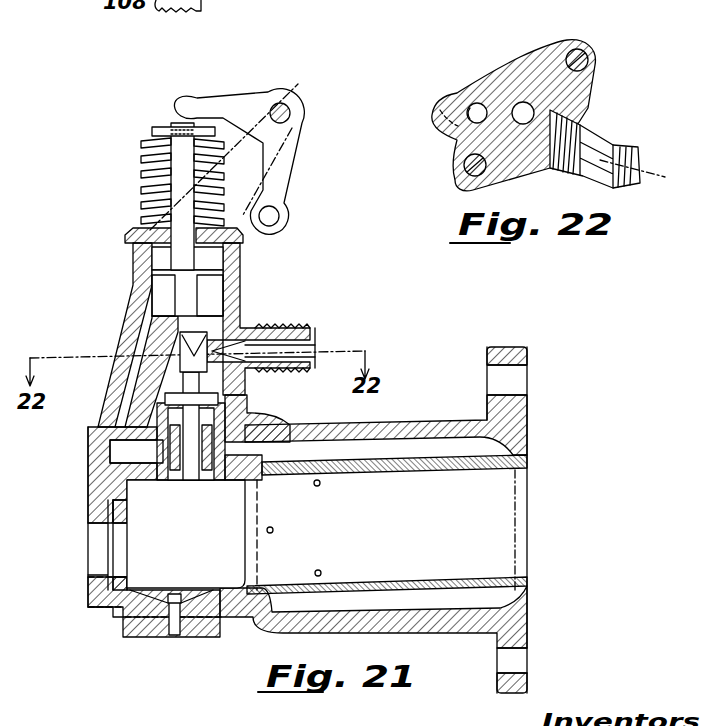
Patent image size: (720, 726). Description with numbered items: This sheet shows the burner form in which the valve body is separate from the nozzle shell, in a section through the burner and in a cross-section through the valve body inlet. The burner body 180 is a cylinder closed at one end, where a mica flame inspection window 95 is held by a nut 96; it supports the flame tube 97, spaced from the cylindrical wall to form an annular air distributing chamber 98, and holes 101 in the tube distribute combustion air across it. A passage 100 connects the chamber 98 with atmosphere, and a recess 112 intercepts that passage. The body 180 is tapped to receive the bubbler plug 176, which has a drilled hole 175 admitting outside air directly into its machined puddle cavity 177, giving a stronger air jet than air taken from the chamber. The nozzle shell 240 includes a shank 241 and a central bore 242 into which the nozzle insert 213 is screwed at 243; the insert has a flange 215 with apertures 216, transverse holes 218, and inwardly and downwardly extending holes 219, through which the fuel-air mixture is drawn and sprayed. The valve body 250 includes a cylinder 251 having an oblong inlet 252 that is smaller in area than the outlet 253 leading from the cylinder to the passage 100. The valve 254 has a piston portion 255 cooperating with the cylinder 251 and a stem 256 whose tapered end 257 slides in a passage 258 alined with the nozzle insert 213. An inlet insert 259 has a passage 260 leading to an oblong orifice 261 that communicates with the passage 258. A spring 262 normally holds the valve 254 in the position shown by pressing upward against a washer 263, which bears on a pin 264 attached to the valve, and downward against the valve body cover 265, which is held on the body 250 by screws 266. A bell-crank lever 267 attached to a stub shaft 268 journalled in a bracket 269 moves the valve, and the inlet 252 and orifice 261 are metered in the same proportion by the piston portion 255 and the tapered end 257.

In FIG. 21, the mica flame inspection window 95 is at (108, 546).
In FIG. 21, the nut 96 is at (96, 584).
In FIG. 21, the flame tube 97 is at (408, 582).
In FIG. 21, the annular air distributing chamber 98 is at (433, 450).
In FIG. 21, the passage 100 is at (253, 446).
In FIG. 21, the holes 101 is at (316, 486).
In FIG. 21, the recess 112 is at (186, 534).
In FIG. 21, the hole 175 is at (182, 594).
In FIG. 21, the plug 176 is at (193, 637).
In FIG. 21, the puddle cavity 177 is at (163, 594).
In FIG. 21, the burner body 180 is at (407, 422).
In FIG. 21, the nozzle insert 213 is at (184, 483).
In FIG. 21, the flange 215 is at (222, 397).
In FIG. 21, the apertures 216 is at (228, 402).
In FIG. 21, the transverse holes 218 is at (277, 421).
In FIG. 21, the inwardly and downwardly extending holes 219 is at (193, 483).
In FIG. 21, the nozzle shell 240 is at (210, 423).
In FIG. 21, the shank 241 is at (167, 447).
In FIG. 21, the central bore 242 is at (142, 371).
In FIG. 21, the threaded attachment 243 is at (223, 513).
In FIG. 21, the valve body 250 is at (97, 421).
In FIG. 22, the valve body 250 is at (433, 108).
In FIG. 21, the cylinder 251 is at (215, 301).
In FIG. 21, the inlet 252 is at (215, 283).
In FIG. 21, the outlet 253 is at (127, 370).
In FIG. 22, the outlet 253 is at (470, 120).
In FIG. 21, the valve 254 is at (178, 177).
In FIG. 21, the piston portion 255 is at (128, 232).
In FIG. 21, the stem 256 is at (158, 258).
In FIG. 21, the tapered end 257 is at (160, 283).
In FIG. 21, the passage 258 is at (185, 358).
In FIG. 22, the passage 258 is at (521, 103).
In FIG. 21, the inlet insert 259 is at (320, 326).
In FIG. 22, the inlet insert 259 is at (613, 133).
In FIG. 21, the passage 260 is at (313, 341).
In FIG. 22, the passage 260 is at (627, 175).
In FIG. 21, the oblong orifice 261 is at (215, 345).
In FIG. 22, the oblong orifice 261 is at (531, 125).
In FIG. 21, the spring 262 is at (145, 162).
In FIG. 21, the washer 263 is at (152, 131).
In FIG. 21, the pin 264 is at (170, 126).
In FIG. 21, the valve body cover 265 is at (272, 228).
In FIG. 22, the screws 266 is at (583, 58).
In FIG. 21, the bell-crank lever 267 is at (222, 100).
In FIG. 21, the stub shaft 268 is at (286, 108).
In FIG. 21, the bracket 269 is at (276, 160).